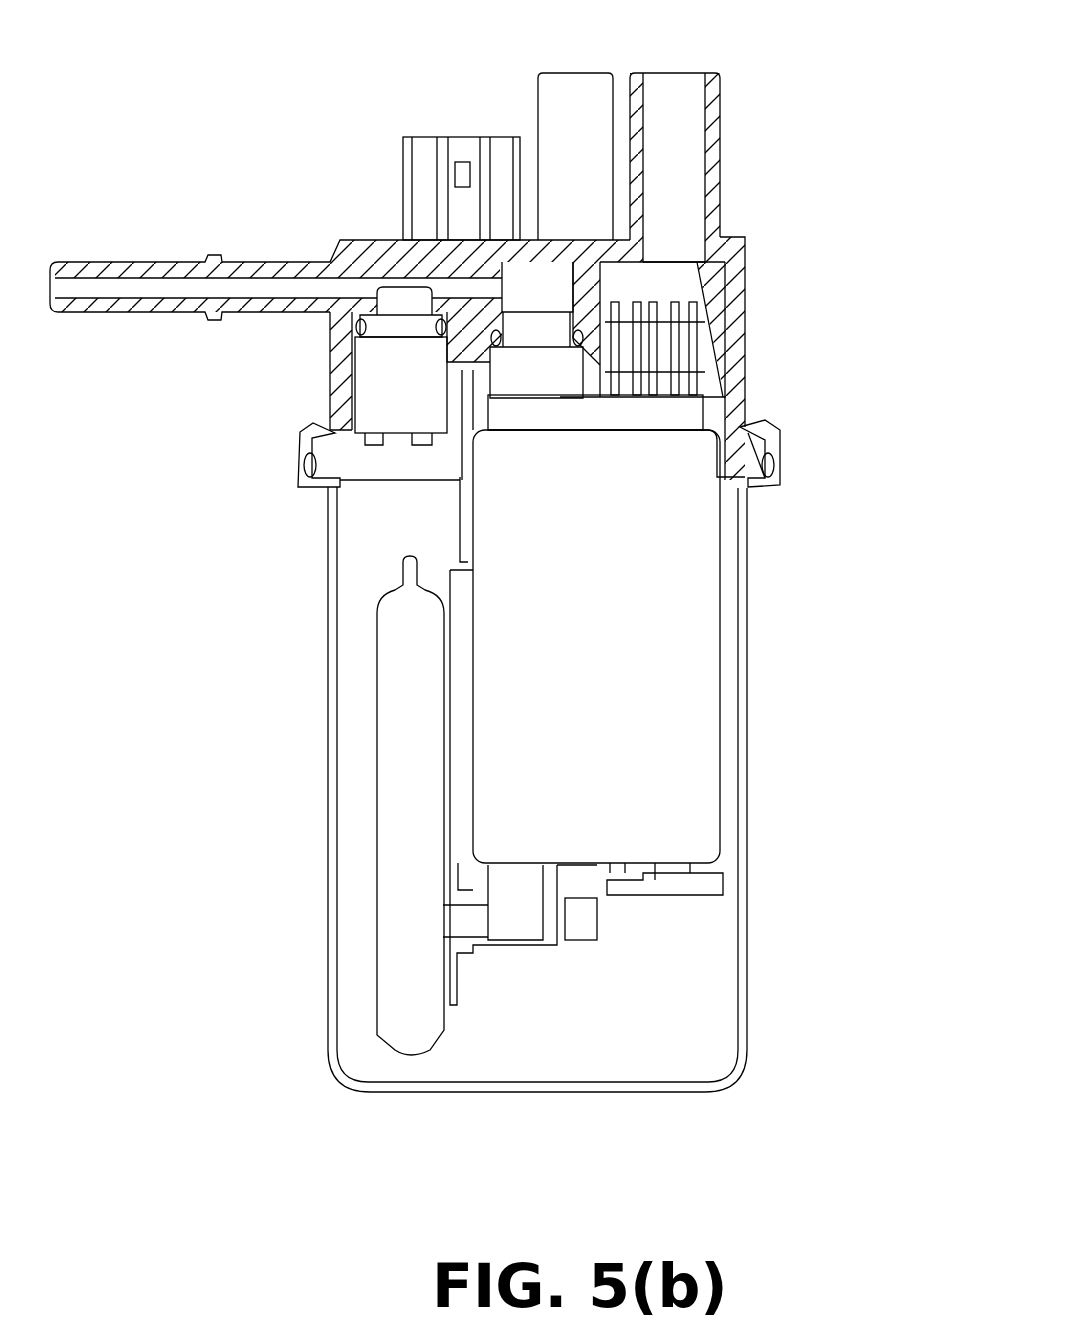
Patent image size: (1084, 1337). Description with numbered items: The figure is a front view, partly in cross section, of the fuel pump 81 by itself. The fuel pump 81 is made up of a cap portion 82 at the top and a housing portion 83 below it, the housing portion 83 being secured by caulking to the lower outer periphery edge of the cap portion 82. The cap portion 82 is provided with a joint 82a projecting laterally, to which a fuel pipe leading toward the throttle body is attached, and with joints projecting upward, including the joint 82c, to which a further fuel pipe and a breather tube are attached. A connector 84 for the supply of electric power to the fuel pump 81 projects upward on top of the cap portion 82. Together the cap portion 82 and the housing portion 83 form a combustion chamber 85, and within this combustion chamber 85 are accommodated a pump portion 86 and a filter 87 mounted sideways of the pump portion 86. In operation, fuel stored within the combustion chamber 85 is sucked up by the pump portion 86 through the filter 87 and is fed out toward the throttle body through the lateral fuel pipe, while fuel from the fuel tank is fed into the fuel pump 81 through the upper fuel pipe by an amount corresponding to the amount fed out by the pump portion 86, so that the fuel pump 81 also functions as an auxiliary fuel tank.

The fuel pump 81 is at (813, 100).
The cap portion 82 is at (737, 320).
The joint 82a is at (150, 270).
The joint 82c is at (537, 105).
The housing portion 83 is at (747, 613).
The connector 84 is at (400, 165).
The combustion chamber 85 is at (677, 958).
The pump portion 86 is at (673, 700).
The filter 87 is at (400, 770).